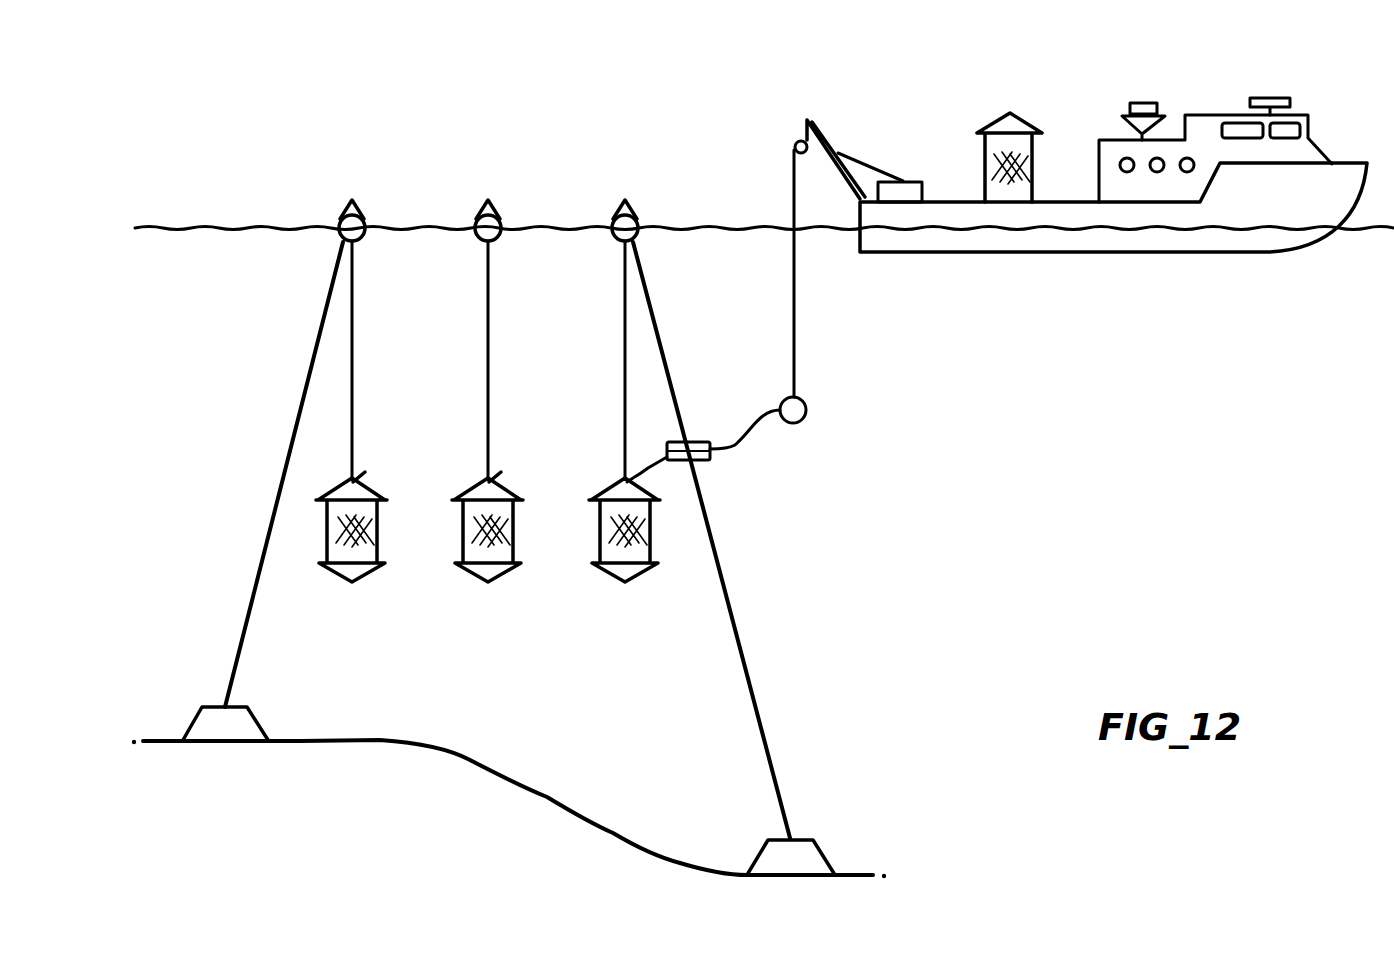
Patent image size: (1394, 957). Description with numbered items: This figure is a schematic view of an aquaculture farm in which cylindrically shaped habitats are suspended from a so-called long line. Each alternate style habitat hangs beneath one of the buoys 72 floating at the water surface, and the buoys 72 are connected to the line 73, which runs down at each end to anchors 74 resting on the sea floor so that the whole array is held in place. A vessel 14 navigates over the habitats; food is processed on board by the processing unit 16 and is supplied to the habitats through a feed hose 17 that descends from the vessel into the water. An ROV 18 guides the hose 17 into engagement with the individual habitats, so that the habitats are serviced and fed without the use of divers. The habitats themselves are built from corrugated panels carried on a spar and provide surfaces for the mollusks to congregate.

The vessel 14 is at (1323, 182).
The processing unit 16 is at (904, 190).
The feed hose 17 is at (794, 295).
The ROV 18 is at (696, 442).
The buoys 72 is at (362, 222).
The line 73 is at (281, 470).
The anchors 74 is at (217, 722).